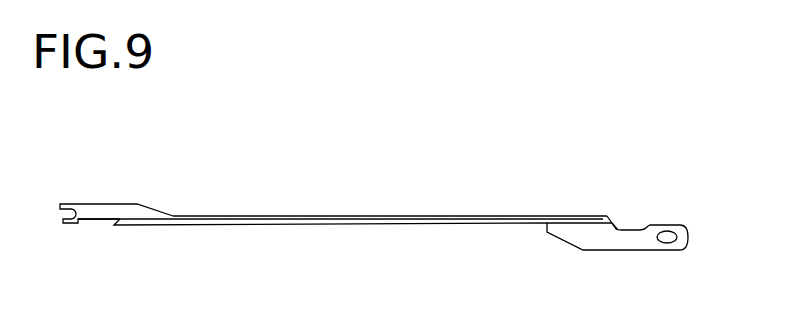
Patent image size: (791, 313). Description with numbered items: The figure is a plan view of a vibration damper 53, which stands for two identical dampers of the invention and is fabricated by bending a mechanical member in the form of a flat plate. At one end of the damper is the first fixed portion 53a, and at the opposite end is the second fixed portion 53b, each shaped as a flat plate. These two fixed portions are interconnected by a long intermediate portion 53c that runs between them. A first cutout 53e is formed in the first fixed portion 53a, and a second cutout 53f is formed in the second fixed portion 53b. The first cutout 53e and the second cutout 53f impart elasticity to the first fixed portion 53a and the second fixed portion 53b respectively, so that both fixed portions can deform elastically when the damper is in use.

The vibration damper 53 is at (374, 223).
The first fixed portion 53a is at (623, 242).
The second fixed portion 53b is at (101, 205).
The intermediate portion 53c is at (350, 224).
The first cutout 53e is at (634, 228).
The second cutout 53f is at (97, 221).